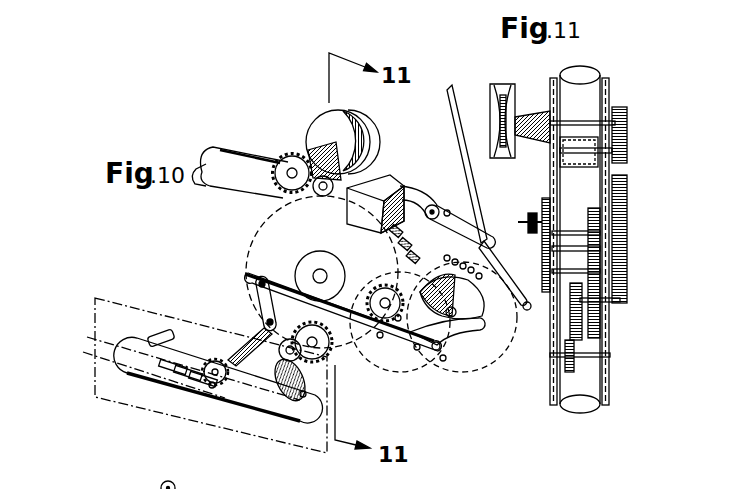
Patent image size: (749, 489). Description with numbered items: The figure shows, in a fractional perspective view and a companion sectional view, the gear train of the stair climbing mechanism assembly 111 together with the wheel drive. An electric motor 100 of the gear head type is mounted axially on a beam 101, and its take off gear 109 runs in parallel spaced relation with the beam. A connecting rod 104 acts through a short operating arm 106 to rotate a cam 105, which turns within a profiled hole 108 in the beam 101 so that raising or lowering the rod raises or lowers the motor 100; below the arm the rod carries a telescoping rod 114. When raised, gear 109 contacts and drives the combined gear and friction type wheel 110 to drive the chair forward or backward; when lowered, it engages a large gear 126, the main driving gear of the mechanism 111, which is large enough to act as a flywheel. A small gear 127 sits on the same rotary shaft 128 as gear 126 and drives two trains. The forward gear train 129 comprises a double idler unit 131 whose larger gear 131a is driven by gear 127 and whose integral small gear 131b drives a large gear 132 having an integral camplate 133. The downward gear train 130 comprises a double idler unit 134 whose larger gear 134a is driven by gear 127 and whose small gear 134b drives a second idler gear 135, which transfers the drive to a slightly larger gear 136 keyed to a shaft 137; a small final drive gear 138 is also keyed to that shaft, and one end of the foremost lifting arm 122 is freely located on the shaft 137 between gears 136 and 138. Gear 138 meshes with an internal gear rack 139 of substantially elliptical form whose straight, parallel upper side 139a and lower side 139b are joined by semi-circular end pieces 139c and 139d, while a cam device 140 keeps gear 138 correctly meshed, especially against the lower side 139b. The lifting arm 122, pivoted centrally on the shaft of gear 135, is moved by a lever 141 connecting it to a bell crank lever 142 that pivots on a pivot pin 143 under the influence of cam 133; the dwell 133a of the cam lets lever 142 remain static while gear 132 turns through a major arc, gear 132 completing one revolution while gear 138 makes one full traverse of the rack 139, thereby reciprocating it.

In FIG. 10, the electric motor 100 is at (371, 197).
In FIG. 11, the electric motor 100 is at (604, 239).
In FIG. 10, the beam 101 is at (238, 156).
In FIG. 10, the connecting rod 104 is at (455, 133).
In FIG. 10, the cam 105 is at (458, 221).
In FIG. 10, the operating arm 106 is at (428, 203).
In FIG. 10, the profiled hole 108 is at (447, 212).
In FIG. 10, the take off gear 109 is at (333, 197).
In FIG. 11, the take off gear 109 is at (640, 153).
In FIG. 10, the gear and friction type wheel 110 is at (348, 130).
In FIG. 11, the gear and friction type wheel 110 is at (502, 108).
In FIG. 10, the stair climbing mechanism assembly 111 is at (160, 90).
In FIG. 10, the telescoping rod 114 is at (519, 289).
In FIG. 10, the lifting arm 122 is at (250, 330).
In FIG. 10, the large gear 126 is at (405, 238).
In FIG. 11, the large gear 126 is at (645, 200).
In FIG. 10, the small gear 127 is at (308, 262).
In FIG. 11, the small gear 127 is at (600, 220).
In FIG. 10, the rotary shaft 128 is at (319, 268).
In FIG. 10, the forward gear train 129 is at (443, 360).
In FIG. 10, the downward gear train 130 is at (325, 402).
In FIG. 10, the double idler unit 131 is at (417, 347).
In FIG. 11, the double idler unit 131 is at (580, 315).
In FIG. 10, the larger gear 131a is at (380, 284).
In FIG. 11, the larger gear 131a is at (600, 300).
In FIG. 10, the small gear 131b is at (380, 338).
In FIG. 10, the large gear 132 is at (473, 340).
In FIG. 11, the large gear 132 is at (580, 372).
In FIG. 10, the camplate 133 is at (453, 306).
In FIG. 11, the camplate 133 is at (570, 372).
In FIG. 10, the dwell 133a is at (457, 318).
In FIG. 10, the double idler unit 134 is at (330, 360).
In FIG. 11, the double idler unit 134 is at (600, 258).
In FIG. 10, the larger gear 134a is at (338, 357).
In FIG. 10, the small gear 134b is at (303, 397).
In FIG. 11, the small gear 134b is at (548, 345).
In FIG. 10, the second idler gear 135 is at (250, 303).
In FIG. 11, the second idler gear 135 is at (551, 205).
In FIG. 10, the gear 136 is at (211, 388).
In FIG. 11, the gear 136 is at (543, 200).
In FIG. 10, the shaft 137 is at (196, 386).
In FIG. 10, the final drive gear 138 is at (182, 381).
In FIG. 11, the final drive gear 138 is at (528, 222).
In FIG. 10, the internal gear rack 139 is at (147, 343).
In FIG. 10, the upper side 139a is at (170, 332).
In FIG. 10, the lower side 139b is at (168, 376).
In FIG. 10, the semi-circular end piece 139c is at (80, 352).
In FIG. 10, the semi-circular end piece 139d is at (262, 405).
In FIG. 10, the cam device 140 is at (140, 350).
In FIG. 10, the lever 141 is at (348, 305).
In FIG. 10, the bell crank lever 142 is at (440, 365).
In FIG. 10, the pivot pin 143 is at (462, 352).